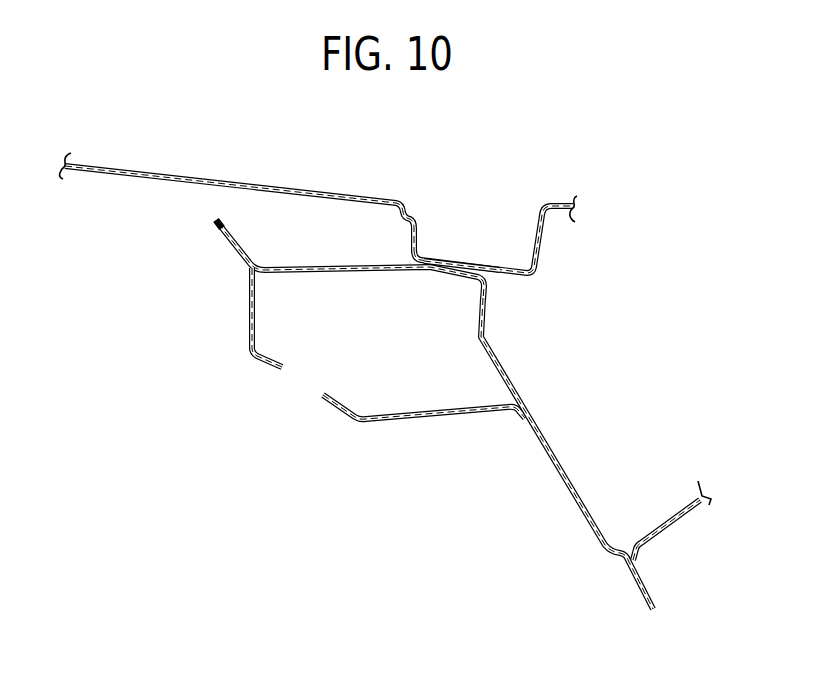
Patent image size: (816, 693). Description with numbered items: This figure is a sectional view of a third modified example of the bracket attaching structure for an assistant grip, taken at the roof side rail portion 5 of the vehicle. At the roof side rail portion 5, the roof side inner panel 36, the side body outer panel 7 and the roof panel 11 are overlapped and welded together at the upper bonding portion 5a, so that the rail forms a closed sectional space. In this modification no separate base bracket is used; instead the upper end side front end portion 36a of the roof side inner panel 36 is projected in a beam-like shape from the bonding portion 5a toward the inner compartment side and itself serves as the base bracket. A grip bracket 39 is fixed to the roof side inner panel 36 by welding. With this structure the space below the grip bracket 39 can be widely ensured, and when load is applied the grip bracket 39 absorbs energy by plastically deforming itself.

The roof panel 11 is at (135, 163).
The roof side rail portion 5 is at (528, 230).
The bonding portion 5a is at (443, 278).
The upper end side front end portion 36a is at (292, 265).
The roof side inner panel 36 is at (587, 506).
The grip bracket 39 is at (407, 422).
The side body outer panel 7 is at (677, 528).